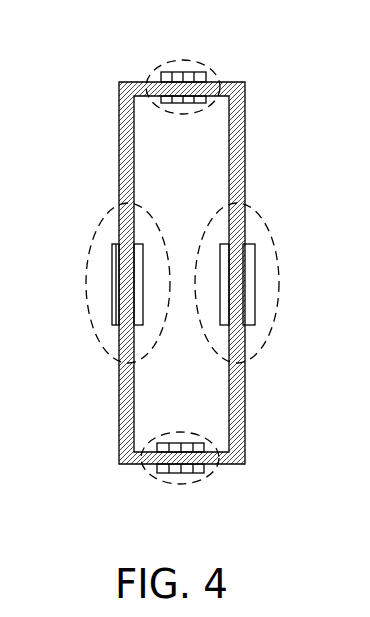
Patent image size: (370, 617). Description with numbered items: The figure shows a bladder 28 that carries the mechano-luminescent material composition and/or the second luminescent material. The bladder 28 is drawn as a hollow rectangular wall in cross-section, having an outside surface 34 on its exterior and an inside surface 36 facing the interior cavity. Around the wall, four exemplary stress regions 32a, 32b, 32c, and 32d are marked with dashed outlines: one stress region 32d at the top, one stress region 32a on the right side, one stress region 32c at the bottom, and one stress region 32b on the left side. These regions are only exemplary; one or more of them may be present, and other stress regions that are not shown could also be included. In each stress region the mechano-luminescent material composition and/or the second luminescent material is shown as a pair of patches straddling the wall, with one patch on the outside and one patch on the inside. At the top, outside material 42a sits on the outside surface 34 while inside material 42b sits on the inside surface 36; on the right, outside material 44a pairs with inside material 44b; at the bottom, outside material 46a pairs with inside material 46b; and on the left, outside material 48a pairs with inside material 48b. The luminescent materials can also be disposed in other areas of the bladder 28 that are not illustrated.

The bladder 28 is at (291, 111).
The outside surface 34 is at (110, 136).
The inside surface 36 is at (146, 140).
The stress region 32a is at (263, 223).
The stress region 32b is at (100, 227).
The stress region 32c is at (182, 483).
The stress region 32d is at (187, 62).
The outside luminescent material 42a is at (157, 63).
The inside luminescent material 42b is at (151, 94).
The outside luminescent material 44a is at (268, 265).
The inside luminescent material 44b is at (235, 308).
The outside luminescent material 46a is at (220, 478).
The inside luminescent material 46b is at (220, 441).
The outside luminescent material 48a is at (98, 280).
The inside luminescent material 48b is at (129, 323).